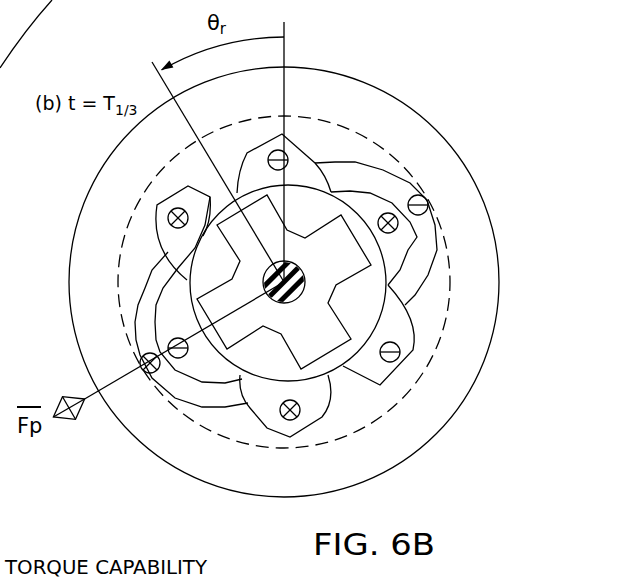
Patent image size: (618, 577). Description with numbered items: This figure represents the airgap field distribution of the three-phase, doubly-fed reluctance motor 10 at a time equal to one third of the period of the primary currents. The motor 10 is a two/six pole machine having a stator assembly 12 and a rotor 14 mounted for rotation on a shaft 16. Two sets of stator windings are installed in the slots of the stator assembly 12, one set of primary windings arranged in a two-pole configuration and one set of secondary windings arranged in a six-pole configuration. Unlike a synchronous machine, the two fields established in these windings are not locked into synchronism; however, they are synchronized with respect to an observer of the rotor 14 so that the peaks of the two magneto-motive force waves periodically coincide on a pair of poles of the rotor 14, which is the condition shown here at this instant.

The doubly-fed reluctance motor 10 is at (477, 157).
The stator assembly 12 is at (416, 115).
The rotor 14 is at (284, 357).
The shaft 16 is at (312, 292).